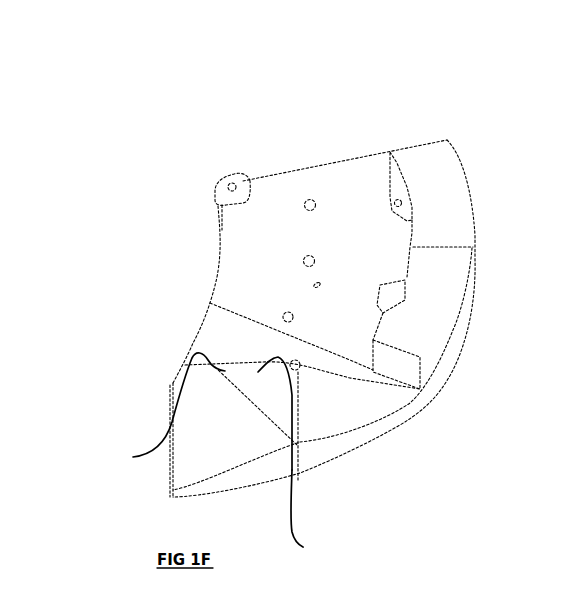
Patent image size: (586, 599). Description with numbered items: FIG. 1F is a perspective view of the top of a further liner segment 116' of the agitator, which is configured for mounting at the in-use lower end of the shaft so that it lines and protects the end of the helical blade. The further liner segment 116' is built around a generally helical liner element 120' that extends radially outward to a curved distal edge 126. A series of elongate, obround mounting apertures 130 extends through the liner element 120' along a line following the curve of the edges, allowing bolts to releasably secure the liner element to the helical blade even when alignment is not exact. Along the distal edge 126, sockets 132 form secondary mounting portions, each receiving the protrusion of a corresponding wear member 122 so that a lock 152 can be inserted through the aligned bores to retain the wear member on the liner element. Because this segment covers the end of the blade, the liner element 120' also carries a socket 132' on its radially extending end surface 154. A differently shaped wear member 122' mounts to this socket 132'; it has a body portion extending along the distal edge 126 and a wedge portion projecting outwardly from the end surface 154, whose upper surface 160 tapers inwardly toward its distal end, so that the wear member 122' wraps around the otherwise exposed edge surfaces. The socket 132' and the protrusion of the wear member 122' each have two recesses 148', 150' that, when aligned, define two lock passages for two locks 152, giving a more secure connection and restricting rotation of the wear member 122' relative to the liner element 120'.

The further liner segment 116' is at (228, 101).
The liner element 120' is at (310, 248).
The mounting apertures 130 is at (317, 260).
The lock 152 is at (397, 200).
The wear member 122 is at (375, 304).
The distal edge 126 is at (413, 237).
The socket 132 is at (455, 298).
The recess 148' is at (250, 326).
The upper surface 160 is at (180, 374).
The end surface 154 is at (198, 411).
The socket 132' is at (312, 517).
The wear member 122' is at (389, 455).
The recess 150' is at (394, 404).